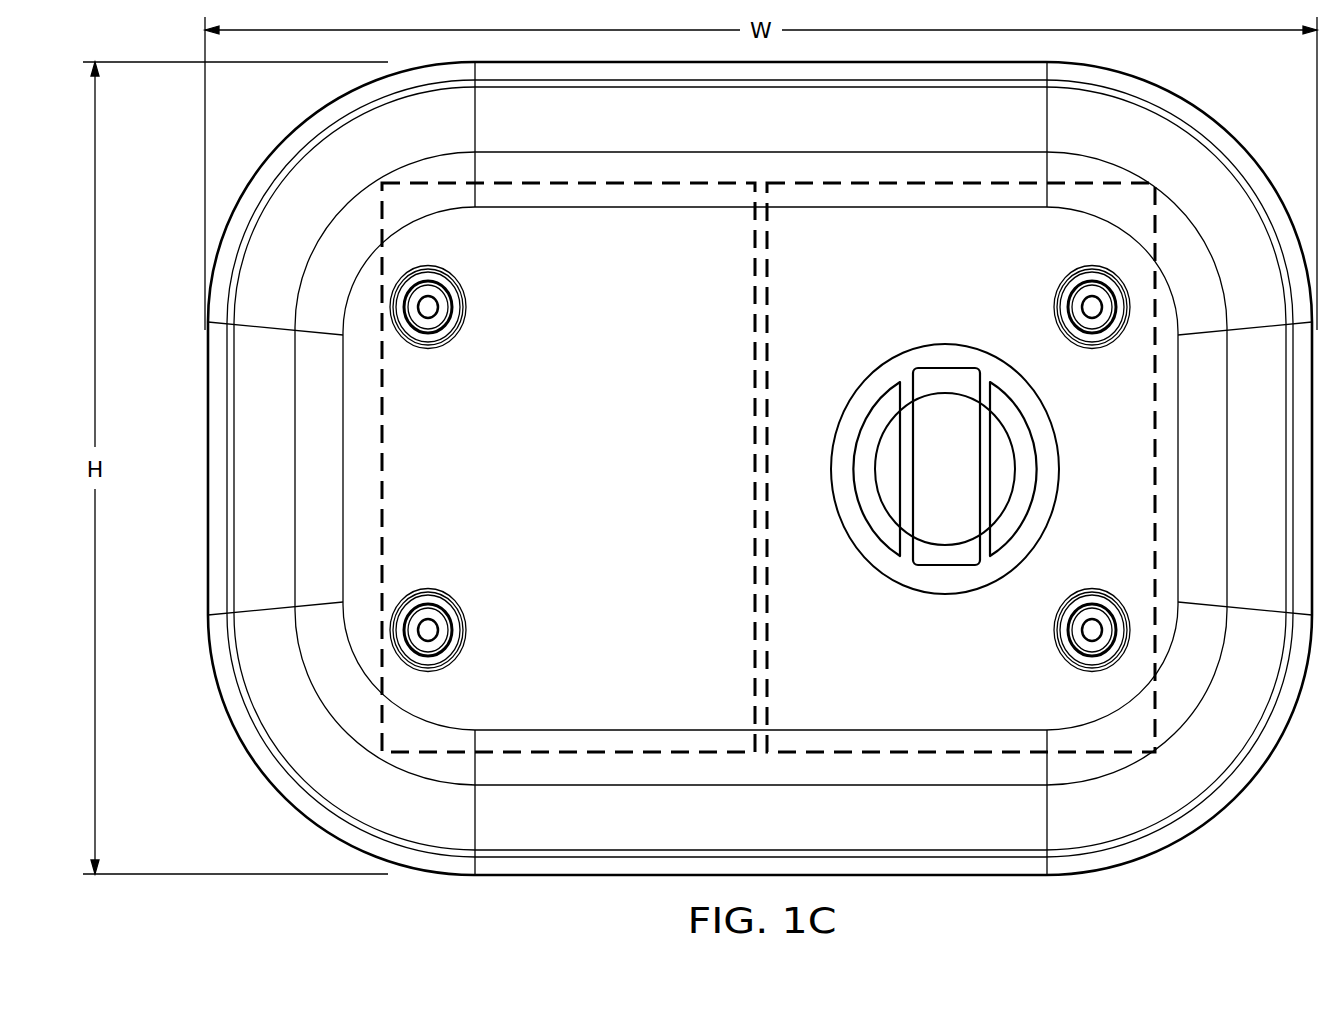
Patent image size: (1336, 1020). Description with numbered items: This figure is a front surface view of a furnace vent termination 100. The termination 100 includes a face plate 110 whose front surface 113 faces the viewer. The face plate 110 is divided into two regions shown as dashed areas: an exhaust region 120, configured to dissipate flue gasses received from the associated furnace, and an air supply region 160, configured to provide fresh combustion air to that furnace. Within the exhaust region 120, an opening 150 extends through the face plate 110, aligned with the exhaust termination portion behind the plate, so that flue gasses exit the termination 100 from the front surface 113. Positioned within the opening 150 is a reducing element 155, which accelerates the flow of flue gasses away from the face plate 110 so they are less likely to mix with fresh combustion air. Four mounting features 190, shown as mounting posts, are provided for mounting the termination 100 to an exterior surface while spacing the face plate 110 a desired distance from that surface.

The termination 100 is at (731, 485).
The face plate 110 is at (222, 696).
The front surface 113 is at (290, 732).
The exhaust region 120 is at (951, 174).
The opening 150 is at (945, 439).
The reducing element 155 is at (942, 380).
The air supply region 160 is at (565, 174).
The mounting features 190 is at (463, 287).